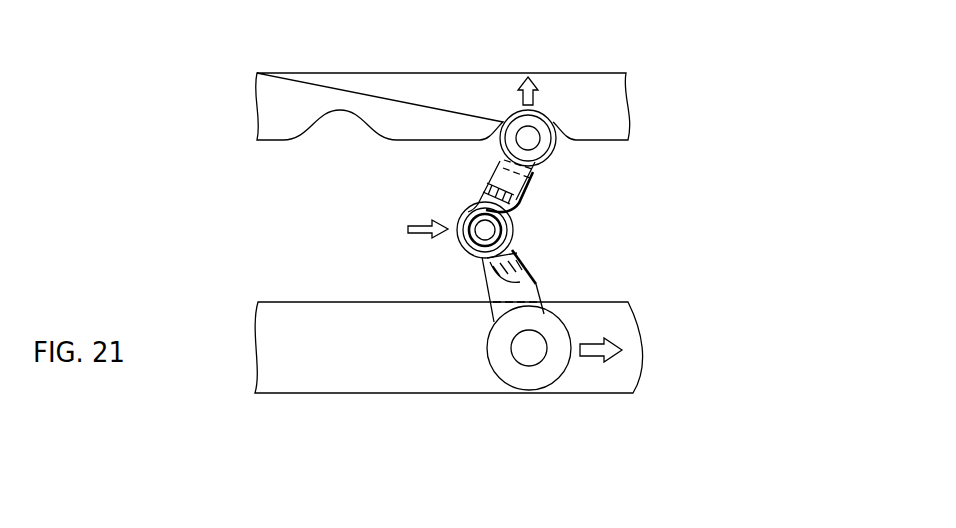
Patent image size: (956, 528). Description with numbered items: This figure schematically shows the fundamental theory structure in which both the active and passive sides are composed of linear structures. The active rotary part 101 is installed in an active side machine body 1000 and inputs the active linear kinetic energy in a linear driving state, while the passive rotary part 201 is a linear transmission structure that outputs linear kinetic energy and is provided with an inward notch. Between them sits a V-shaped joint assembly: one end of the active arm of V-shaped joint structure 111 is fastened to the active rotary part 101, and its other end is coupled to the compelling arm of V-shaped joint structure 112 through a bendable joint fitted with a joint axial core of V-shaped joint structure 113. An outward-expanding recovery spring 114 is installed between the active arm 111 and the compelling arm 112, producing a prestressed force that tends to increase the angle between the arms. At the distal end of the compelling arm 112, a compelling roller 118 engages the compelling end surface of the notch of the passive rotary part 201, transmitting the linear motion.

The passive rotary part 201 is at (436, 96).
The compelling roller 118 is at (560, 152).
The compelling arm of V-shaped joint structure 112 is at (500, 169).
The outward-expanding recovery spring 114 is at (503, 199).
The joint axial core of V-shaped joint structure 113 is at (488, 232).
The active arm of V-shaped joint structure 111 is at (497, 293).
The active side machine body 1000 is at (345, 370).
The active rotary part 101 is at (523, 352).